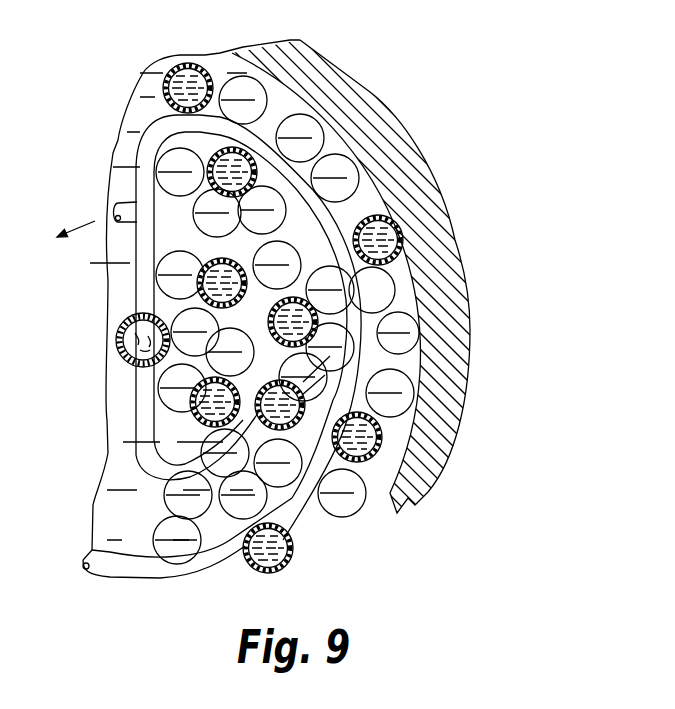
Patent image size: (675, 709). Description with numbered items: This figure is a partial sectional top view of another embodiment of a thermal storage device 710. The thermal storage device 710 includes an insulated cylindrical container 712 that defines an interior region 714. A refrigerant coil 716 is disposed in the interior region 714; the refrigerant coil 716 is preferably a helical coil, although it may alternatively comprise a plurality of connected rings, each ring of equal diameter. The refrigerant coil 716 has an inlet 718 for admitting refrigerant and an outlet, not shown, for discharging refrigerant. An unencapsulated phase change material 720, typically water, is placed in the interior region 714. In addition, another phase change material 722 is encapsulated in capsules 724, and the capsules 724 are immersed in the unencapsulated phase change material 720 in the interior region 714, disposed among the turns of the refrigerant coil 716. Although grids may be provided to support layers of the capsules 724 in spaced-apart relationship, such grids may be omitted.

The thermal storage device 710 is at (470, 141).
The insulated cylindrical container 712 is at (444, 343).
The interior region 714 is at (364, 205).
The refrigerant coil 716 is at (138, 177).
The inlet 718 is at (118, 339).
The unencapsulated phase change material 720 is at (110, 482).
The phase change material 722 is at (283, 570).
The capsules 724 is at (382, 444).